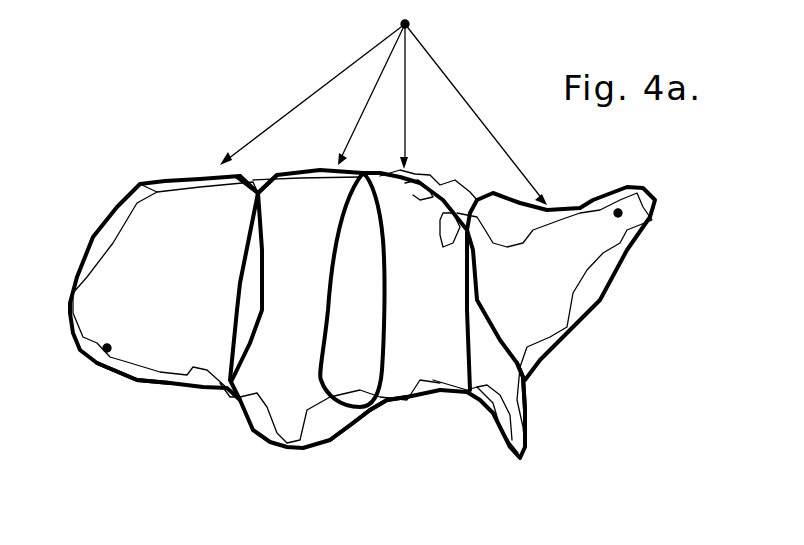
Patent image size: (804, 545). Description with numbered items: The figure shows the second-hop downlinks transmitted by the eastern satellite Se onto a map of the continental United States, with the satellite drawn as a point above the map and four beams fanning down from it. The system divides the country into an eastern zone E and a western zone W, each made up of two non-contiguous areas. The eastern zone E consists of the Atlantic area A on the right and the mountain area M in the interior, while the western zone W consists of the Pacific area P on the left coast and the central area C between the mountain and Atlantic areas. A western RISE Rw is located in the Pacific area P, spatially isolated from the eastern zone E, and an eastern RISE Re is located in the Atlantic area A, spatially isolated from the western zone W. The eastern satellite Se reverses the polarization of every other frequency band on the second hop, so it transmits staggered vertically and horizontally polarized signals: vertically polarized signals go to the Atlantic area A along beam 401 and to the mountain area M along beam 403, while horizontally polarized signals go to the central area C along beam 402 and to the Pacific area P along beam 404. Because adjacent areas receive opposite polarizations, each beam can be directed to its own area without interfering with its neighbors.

The beam 401 is at (470, 110).
The beam 402 is at (405, 138).
The beam 403 is at (350, 127).
The beam 404 is at (273, 127).
The eastern satellite Se is at (401, 22).
The western RISE Rw is at (107, 348).
The eastern RISE Re is at (618, 213).
The Pacific area P is at (105, 309).
The mountain area M is at (298, 296).
The central area C is at (427, 315).
The Atlantic area A is at (535, 288).
The western zone W is at (393, 418).
The eastern zone E is at (540, 410).